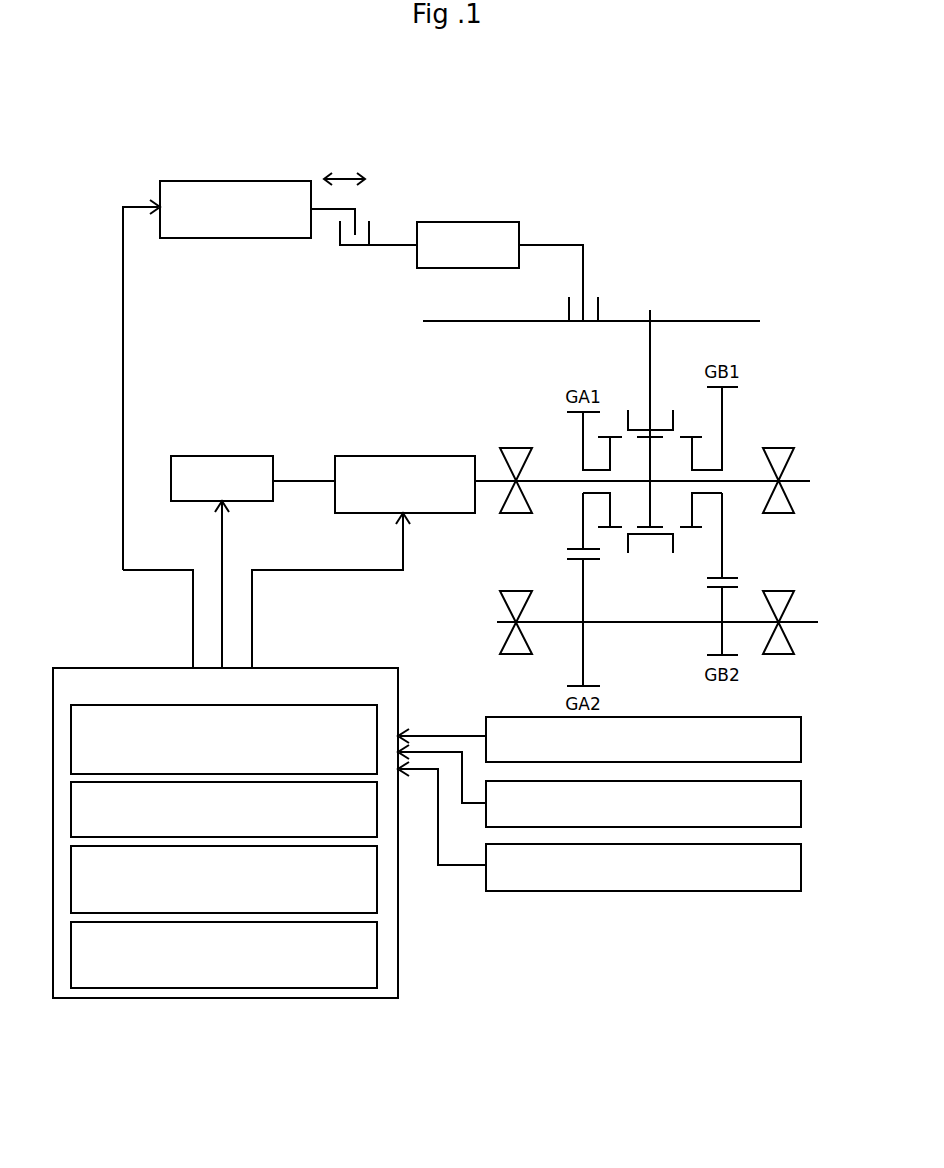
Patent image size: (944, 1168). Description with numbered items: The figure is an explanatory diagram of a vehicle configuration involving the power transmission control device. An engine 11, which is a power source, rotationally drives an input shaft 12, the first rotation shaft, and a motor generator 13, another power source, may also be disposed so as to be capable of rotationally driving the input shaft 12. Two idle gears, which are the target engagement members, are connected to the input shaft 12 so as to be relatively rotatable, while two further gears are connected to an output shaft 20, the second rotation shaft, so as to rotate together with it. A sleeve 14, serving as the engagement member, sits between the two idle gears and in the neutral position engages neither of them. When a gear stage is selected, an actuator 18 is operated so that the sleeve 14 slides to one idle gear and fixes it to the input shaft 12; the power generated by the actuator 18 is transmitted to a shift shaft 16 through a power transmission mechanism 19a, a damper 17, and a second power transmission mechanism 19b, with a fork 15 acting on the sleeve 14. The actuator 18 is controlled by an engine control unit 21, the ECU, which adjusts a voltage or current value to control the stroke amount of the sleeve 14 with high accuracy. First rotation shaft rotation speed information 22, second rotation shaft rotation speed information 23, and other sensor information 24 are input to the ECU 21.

The engine 11 is at (222, 456).
The input shaft 12 is at (302, 481).
The motor generator 13 is at (425, 456).
The sleeve 14 is at (677, 420).
The fork 15 is at (651, 345).
The shift shaft 16 is at (733, 321).
The damper 17 is at (459, 221).
The actuator 18 is at (223, 181).
The power transmission mechanism 19a is at (372, 232).
The power transmission mechanism 19b is at (598, 310).
The output shaft 20 is at (801, 620).
The engine control unit (ECU) 21 is at (333, 668).
The first rotation shaft rotation speed information 22 is at (803, 738).
The second rotation shaft rotation speed information 23 is at (803, 803).
The other sensor information 24 is at (803, 866).